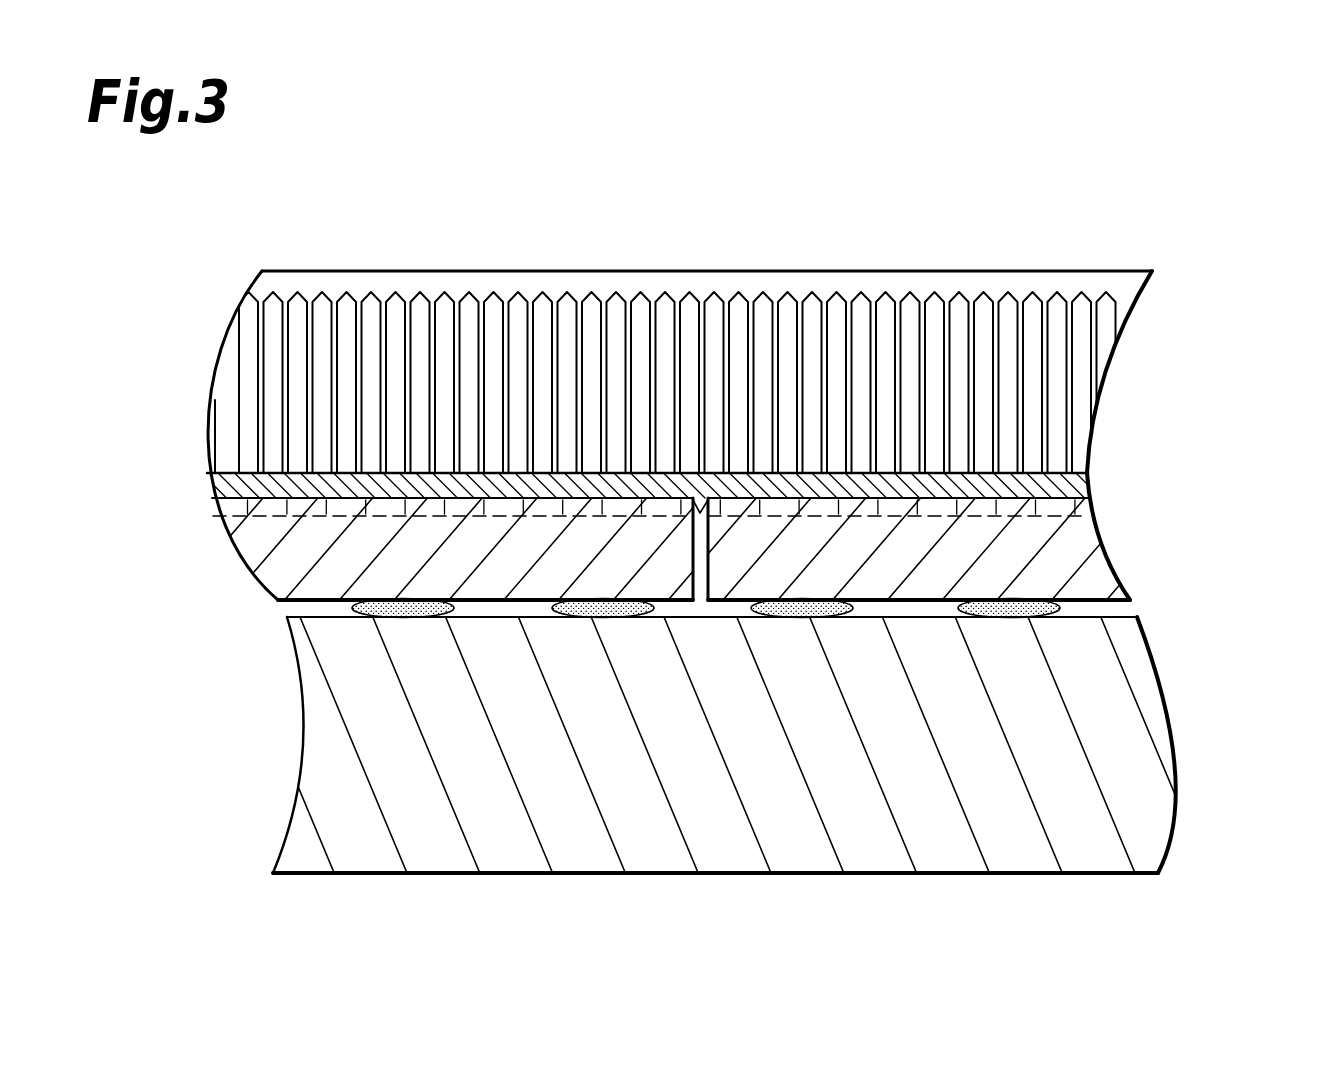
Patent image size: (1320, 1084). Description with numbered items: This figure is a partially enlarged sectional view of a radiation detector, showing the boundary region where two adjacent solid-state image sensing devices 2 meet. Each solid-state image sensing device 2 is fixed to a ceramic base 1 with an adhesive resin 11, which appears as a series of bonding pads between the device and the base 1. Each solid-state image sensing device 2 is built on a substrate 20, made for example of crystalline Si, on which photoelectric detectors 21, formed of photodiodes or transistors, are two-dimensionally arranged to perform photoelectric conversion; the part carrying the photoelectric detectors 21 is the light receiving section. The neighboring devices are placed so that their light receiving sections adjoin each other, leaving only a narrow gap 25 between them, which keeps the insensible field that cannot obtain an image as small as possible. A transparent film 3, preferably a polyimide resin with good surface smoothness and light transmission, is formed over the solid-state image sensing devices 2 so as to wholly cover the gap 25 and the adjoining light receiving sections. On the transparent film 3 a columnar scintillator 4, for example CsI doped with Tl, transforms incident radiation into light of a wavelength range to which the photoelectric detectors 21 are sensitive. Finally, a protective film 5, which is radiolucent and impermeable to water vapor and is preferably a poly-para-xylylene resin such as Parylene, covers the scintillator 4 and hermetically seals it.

The base 1 is at (1110, 755).
The adhesive resin 11 is at (1032, 622).
The solid-state image sensing device 2 is at (1249, 510).
The substrate 20 is at (1060, 562).
The photoelectric detectors 21 is at (1087, 510).
The gap 25 is at (702, 560).
The transparent film 3 is at (1065, 480).
The scintillator 4 is at (1028, 425).
The protective film 5 is at (1093, 283).